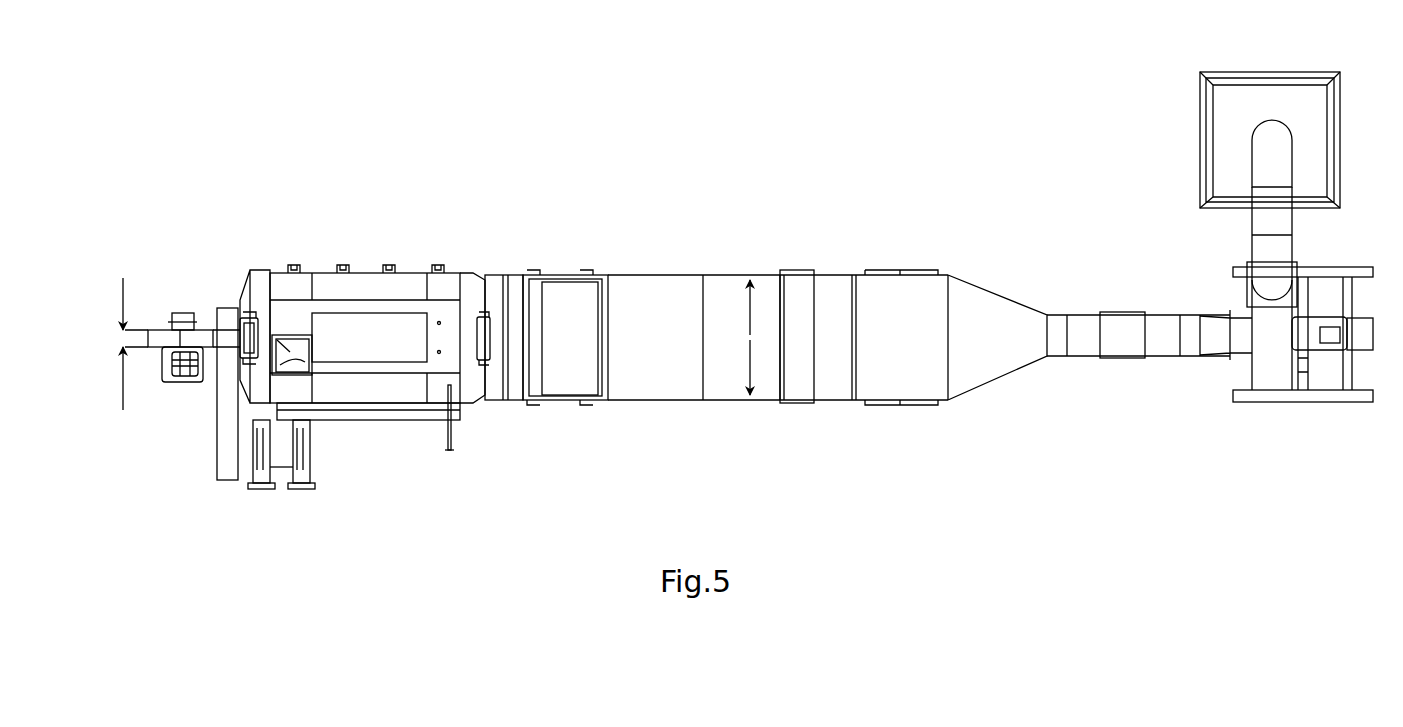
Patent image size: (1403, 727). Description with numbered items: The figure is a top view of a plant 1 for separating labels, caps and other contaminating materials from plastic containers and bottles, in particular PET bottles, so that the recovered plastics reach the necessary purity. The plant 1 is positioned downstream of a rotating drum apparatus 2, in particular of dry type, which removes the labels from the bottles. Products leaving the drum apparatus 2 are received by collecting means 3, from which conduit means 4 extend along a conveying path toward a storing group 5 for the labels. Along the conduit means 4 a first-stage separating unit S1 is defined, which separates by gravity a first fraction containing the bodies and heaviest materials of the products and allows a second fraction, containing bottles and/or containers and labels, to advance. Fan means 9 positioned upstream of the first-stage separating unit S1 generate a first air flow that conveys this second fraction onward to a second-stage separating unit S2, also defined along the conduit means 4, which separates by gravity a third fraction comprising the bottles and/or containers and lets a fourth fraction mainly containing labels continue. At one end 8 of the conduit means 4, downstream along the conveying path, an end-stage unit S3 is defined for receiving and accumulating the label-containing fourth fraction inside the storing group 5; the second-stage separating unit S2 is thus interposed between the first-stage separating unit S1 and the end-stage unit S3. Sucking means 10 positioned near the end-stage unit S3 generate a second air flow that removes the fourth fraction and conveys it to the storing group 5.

The plant 1 is at (686, 133).
The rotating drum apparatus 2 is at (381, 327).
The collecting means 3 is at (509, 235).
The conduit means 4 is at (631, 387).
The storing group 5 is at (1318, 152).
The end of the conduit means 8 is at (1138, 187).
The fan means 9 is at (193, 337).
The sucking means 10 is at (1302, 258).
The first-stage separating unit S1 is at (512, 446).
The second-stage separating unit S2 is at (868, 454).
The end-stage unit S3 is at (1196, 233).